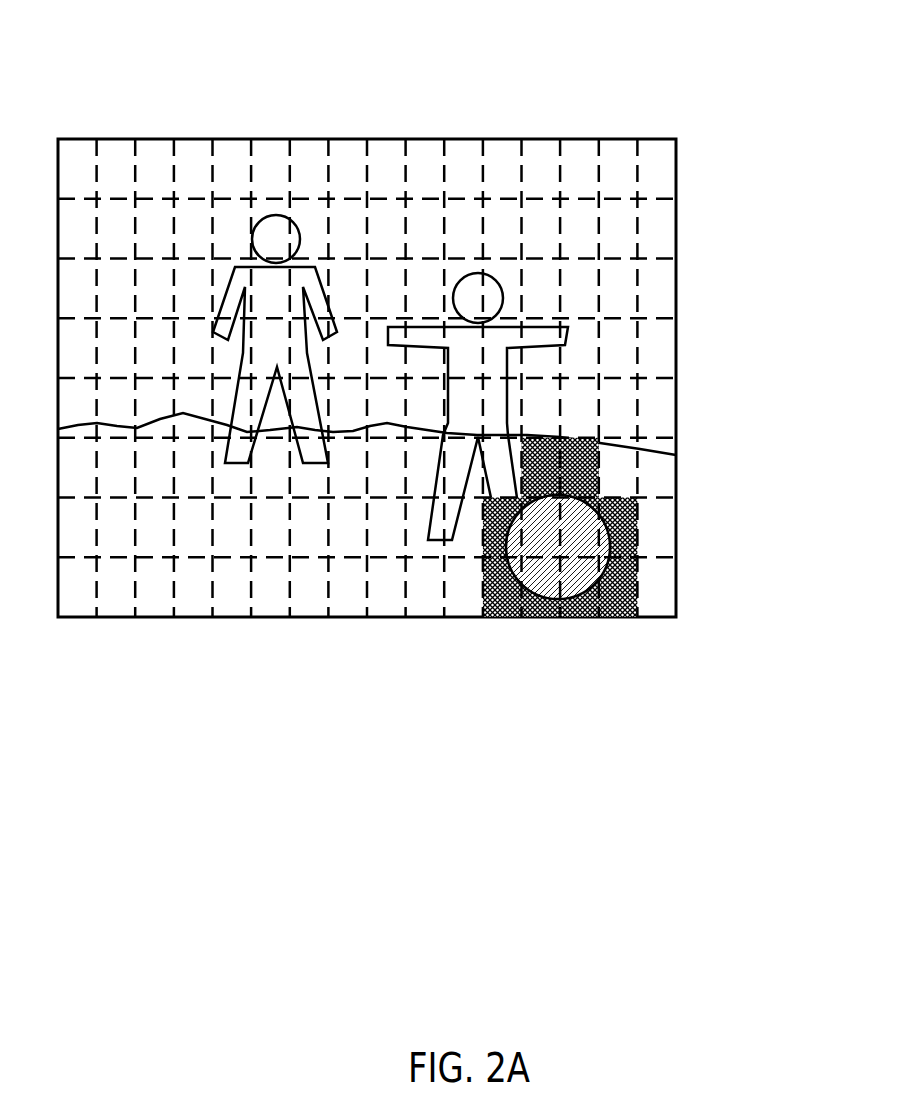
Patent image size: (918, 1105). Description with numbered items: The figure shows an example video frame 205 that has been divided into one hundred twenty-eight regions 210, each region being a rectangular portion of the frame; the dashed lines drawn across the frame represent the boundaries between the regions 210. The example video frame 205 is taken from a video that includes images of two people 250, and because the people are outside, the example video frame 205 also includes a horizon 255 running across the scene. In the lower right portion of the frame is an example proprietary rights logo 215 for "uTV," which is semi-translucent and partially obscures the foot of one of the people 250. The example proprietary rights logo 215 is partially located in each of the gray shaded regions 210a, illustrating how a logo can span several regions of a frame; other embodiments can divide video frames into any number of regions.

The example video frame 205 is at (298, 130).
The regions 210 is at (652, 170).
The regions containing logo 210a is at (620, 517).
The example proprietary rights logo 215 is at (558, 602).
The people 250 is at (292, 217).
The horizon 255 is at (148, 433).